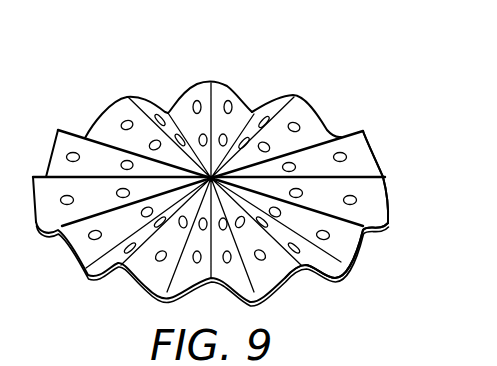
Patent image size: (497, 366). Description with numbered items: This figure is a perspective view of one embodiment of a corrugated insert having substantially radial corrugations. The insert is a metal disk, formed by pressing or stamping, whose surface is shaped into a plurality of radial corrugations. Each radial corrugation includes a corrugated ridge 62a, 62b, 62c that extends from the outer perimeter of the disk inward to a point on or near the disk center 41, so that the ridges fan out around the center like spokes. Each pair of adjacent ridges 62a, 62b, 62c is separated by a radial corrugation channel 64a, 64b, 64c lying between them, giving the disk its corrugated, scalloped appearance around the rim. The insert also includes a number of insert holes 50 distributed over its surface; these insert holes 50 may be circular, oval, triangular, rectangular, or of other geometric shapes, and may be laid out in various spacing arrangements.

The disk center 41 is at (172, 112).
The insert holes 50 is at (232, 103).
The corrugated ridge 62a is at (360, 128).
The radial corrugation channel 64a is at (371, 172).
The corrugated ridge 62b is at (385, 177).
The radial corrugation channel 64b is at (376, 214).
The corrugated ridge 62c is at (364, 234).
The radial corrugation channel 64c is at (334, 262).